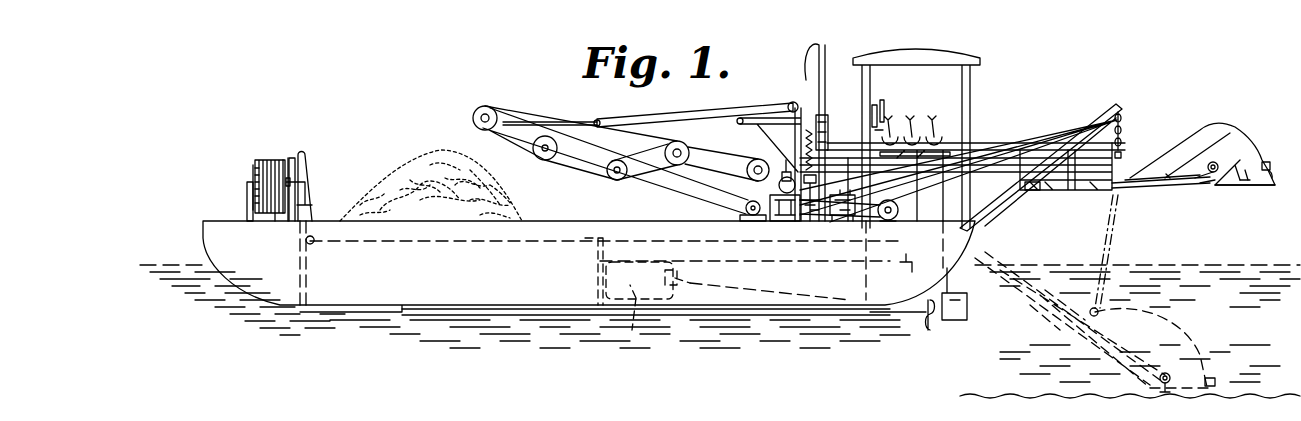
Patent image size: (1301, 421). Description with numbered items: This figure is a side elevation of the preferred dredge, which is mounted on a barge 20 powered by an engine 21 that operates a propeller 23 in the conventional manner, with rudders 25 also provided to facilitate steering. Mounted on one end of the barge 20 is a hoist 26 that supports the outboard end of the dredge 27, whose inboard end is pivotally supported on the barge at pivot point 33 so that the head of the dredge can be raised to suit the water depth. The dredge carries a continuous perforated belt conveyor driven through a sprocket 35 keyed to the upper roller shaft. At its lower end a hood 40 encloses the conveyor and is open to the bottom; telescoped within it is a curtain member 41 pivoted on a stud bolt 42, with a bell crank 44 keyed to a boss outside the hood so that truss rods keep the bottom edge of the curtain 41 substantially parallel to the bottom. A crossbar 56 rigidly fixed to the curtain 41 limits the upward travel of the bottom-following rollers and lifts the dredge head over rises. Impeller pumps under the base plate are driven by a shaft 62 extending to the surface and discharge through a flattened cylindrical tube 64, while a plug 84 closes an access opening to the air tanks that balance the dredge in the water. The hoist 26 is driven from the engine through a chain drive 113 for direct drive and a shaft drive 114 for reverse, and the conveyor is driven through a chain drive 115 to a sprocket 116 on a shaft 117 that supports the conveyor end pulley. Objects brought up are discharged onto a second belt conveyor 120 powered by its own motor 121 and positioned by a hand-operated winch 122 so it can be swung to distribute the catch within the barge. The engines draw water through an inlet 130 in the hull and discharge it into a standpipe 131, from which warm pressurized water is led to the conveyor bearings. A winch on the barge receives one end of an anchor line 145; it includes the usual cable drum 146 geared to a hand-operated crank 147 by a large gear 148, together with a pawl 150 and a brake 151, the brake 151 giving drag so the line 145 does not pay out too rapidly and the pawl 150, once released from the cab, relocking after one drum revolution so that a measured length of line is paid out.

The barge 20 is at (439, 276).
The engine 21 is at (640, 322).
The propeller 23 is at (928, 330).
The rudder 25 is at (960, 320).
The hoist 26 is at (1126, 104).
The dredge 27 is at (1251, 129).
The pivot point 33 is at (785, 172).
The sprocket 35 is at (752, 163).
The hood 40 is at (1200, 135).
The curtain member 41 is at (1238, 188).
The stud bolt 42 is at (1212, 162).
The bell crank 44 is at (1208, 186).
The crossbar 56 is at (1272, 162).
The shaft 62 is at (1036, 190).
The cylindrical tube 64 is at (1160, 190).
The plug 84 is at (1124, 145).
The chain drive 113 is at (886, 219).
The shaft drive 114 is at (840, 218).
The chain drive 115 is at (746, 203).
The sprocket 116 is at (746, 166).
The shaft 117 is at (752, 173).
The second belt conveyor 120 is at (510, 115).
The motor 121 is at (615, 130).
The hand-operated winch 122 is at (688, 118).
The inlet 130 is at (598, 310).
The standpipe 131 is at (831, 95).
The line 145 is at (262, 158).
The cable drum 146 is at (268, 158).
The hand-operated crank 147 is at (304, 200).
The large gear 148 is at (252, 160).
The pawl 150 is at (288, 152).
The brake 151 is at (300, 152).